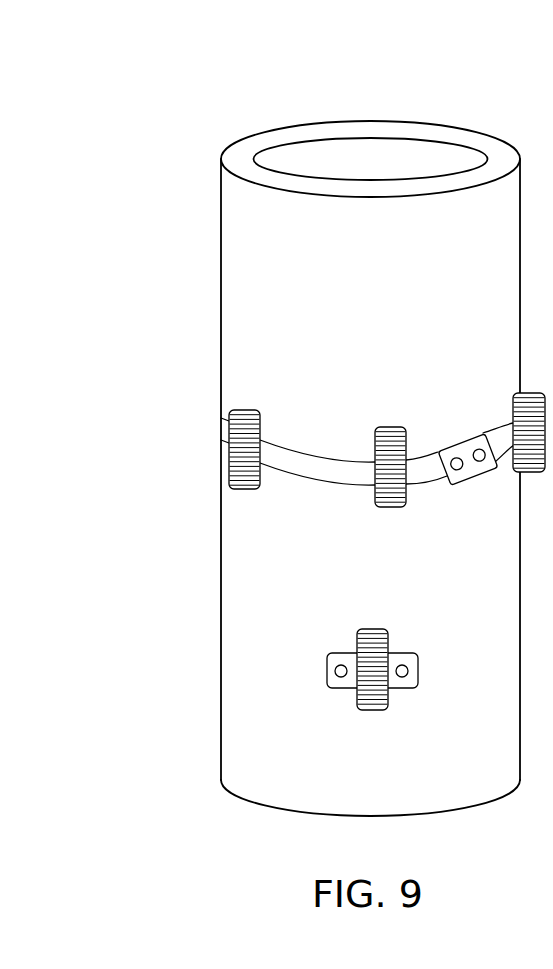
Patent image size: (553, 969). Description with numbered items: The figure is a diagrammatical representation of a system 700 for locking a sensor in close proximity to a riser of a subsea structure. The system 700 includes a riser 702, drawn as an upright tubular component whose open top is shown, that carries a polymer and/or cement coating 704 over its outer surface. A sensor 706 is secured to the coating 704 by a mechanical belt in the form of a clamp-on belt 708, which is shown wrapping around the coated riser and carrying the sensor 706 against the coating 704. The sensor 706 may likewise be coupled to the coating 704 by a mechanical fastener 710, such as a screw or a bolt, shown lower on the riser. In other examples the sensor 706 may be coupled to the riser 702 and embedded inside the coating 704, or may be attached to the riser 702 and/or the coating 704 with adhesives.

The diagrammatical representative of a locking mechanism 700 is at (178, 52).
The riser 702 is at (368, 150).
The coating 704 is at (498, 152).
The sensor 706 is at (243, 410).
The clamp-on belt 708 is at (474, 478).
The mechanical fastener 710 is at (415, 652).